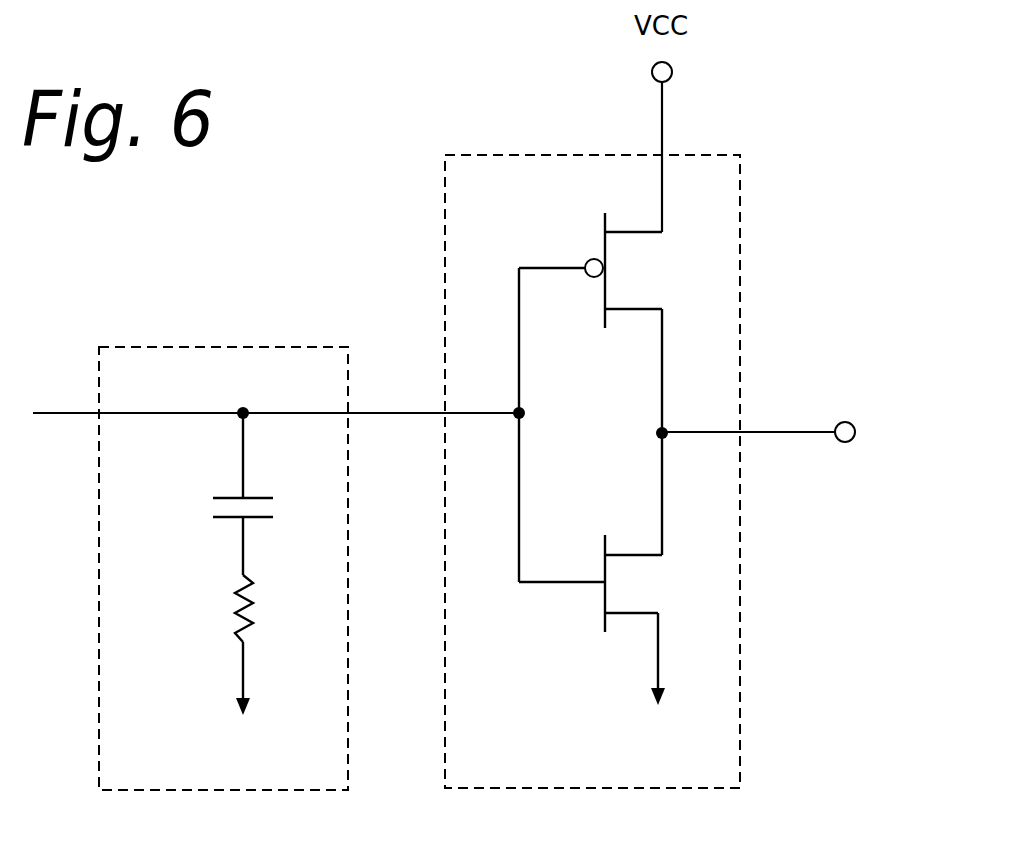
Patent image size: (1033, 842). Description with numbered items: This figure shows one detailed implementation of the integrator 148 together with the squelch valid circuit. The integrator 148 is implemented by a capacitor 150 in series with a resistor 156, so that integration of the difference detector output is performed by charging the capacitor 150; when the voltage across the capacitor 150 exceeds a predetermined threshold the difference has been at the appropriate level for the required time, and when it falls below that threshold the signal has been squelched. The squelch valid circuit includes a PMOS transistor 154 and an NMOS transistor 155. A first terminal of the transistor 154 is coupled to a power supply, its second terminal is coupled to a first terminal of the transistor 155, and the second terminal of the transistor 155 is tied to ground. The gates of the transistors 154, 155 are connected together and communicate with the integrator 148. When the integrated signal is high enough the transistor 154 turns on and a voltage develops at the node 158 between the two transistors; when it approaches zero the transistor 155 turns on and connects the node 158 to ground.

The integrator 148 is at (150, 357).
The capacitor 150 is at (232, 497).
The transistor 154 is at (603, 247).
The transistor 155 is at (603, 605).
The resistor 156 is at (233, 613).
The node 158 is at (842, 424).